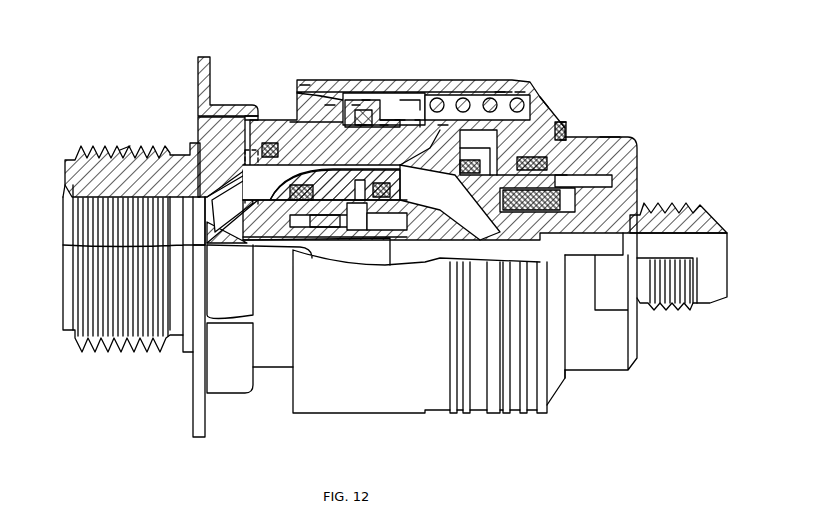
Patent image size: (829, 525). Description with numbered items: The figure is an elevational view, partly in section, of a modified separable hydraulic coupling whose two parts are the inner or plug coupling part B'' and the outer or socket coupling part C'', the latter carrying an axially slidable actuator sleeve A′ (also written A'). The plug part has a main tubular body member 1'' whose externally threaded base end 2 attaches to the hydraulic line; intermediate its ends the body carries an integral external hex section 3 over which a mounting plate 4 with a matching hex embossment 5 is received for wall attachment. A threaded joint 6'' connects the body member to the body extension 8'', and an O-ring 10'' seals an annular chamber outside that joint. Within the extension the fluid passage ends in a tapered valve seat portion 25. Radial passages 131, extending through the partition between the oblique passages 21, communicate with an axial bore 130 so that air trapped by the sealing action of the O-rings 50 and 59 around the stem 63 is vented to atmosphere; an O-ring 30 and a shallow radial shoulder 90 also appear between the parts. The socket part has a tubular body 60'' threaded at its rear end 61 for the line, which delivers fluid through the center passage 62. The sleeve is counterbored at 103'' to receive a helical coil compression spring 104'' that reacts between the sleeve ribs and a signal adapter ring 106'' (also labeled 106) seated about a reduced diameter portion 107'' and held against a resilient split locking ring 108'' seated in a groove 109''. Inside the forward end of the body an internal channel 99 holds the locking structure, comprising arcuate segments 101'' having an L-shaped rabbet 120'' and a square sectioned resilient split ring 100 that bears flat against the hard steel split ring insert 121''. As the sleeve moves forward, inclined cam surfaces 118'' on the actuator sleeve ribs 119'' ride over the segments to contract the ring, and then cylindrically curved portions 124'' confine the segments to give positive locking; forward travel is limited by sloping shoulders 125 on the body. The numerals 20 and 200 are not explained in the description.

The base end 2 is at (72, 160).
The main tubular body member 1'' is at (117, 130).
The external hex section 3 is at (200, 135).
The plate 4 is at (198, 90).
The hex embossment 5 is at (228, 105).
The O-ring 10'' is at (440, 151).
The threaded joint 6'' is at (301, 85).
The sloping shoulders 125 is at (317, 92).
The cam surfaces 118'' is at (347, 64).
The split ring 100 is at (368, 100).
The circumferential rabbet 120'' is at (391, 91).
The arcuate segments 101'' is at (369, 77).
The cylindrically curved portions 124'' is at (399, 88).
The split ring insert 121'' is at (422, 75).
The actuator sleeve ribs 119'' is at (433, 86).
The body extension 8'' is at (451, 91).
The tapered valve seat portion 25 is at (466, 97).
The counterbore 103'' is at (511, 70).
The helical coil compression spring 104'' is at (537, 70).
The signal adapter ring 106'' is at (569, 79).
The groove 109'' is at (589, 105).
The split locking ring 108'' is at (589, 124).
The reduced diameter portion 107'' is at (639, 131).
The radial passages 131 is at (245, 166).
The oblique passages 21 is at (232, 212).
The nut threads 20 is at (140, 228).
The internal channel 99 is at (384, 125).
The O-ring 30 is at (478, 152).
The radial shoulder 90 is at (477, 160).
The pin 200 is at (325, 218).
The O-ring 59 is at (392, 198).
The axial bore 130 is at (362, 256).
The O-ring 50 is at (304, 200).
The stem 63 is at (556, 205).
The center passage 62 is at (699, 251).
The threaded rear end 61 is at (670, 307).
The signal adapter ring 106 is at (596, 301).
The tubular body 60'' is at (592, 384).
The outer coupling part C'' is at (659, 355).
The inner coupling part B'' is at (136, 384).
The actuator sleeve A′ is at (369, 343).
The actuator sleeve A' is at (369, 343).